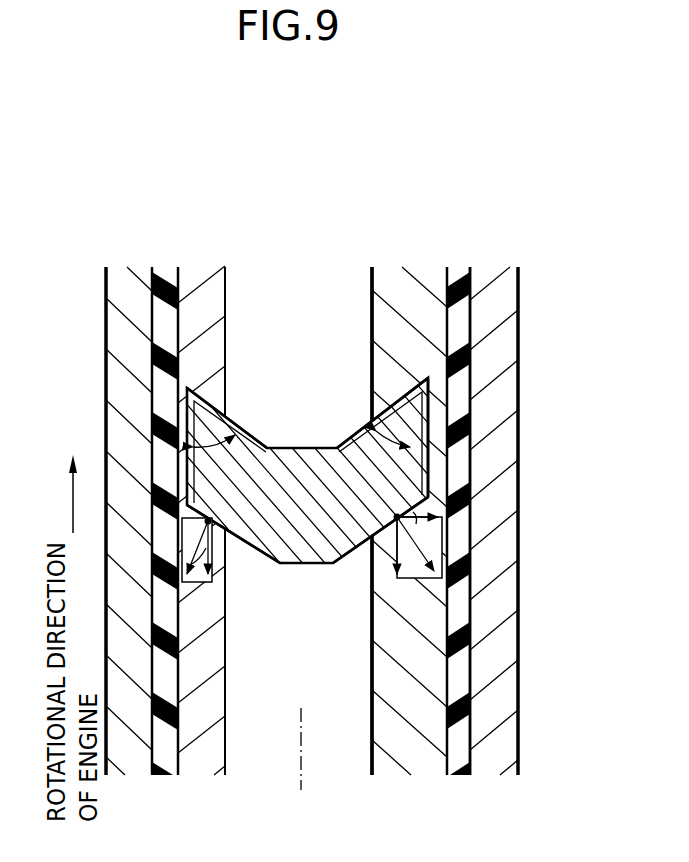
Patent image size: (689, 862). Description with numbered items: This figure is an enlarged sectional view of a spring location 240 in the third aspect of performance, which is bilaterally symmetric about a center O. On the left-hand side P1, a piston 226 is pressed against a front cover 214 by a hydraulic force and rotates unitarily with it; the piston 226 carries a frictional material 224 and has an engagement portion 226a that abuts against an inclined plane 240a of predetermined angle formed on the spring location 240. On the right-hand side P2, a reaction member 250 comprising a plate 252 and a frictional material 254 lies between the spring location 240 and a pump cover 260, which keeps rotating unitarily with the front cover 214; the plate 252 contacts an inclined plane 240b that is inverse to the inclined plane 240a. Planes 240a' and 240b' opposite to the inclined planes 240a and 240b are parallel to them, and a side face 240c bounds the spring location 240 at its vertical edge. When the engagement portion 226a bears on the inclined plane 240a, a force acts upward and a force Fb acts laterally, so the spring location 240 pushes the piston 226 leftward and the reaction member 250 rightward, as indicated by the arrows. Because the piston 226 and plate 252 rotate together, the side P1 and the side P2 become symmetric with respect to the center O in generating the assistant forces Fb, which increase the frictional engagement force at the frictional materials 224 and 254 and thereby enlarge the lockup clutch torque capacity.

The front cover 214 is at (122, 283).
The frictional material 224 is at (165, 277).
The piston 226 is at (215, 283).
The engagement portion 226a is at (241, 320).
The spring location 240 is at (306, 470).
The inclined plane 240a is at (254, 565).
The plane 240a' is at (245, 421).
The inclined plane 240b is at (467, 562).
The plane 240b' is at (363, 403).
The side face of wedge member 240c is at (414, 420).
The reaction member 250 is at (517, 195).
The plate 252 is at (413, 283).
The frictional material 254 is at (458, 277).
The pump cover 260 is at (504, 332).
The force Fb is at (443, 505).
The side P1 is at (237, 783).
The side P2 is at (520, 783).
The center O is at (303, 763).